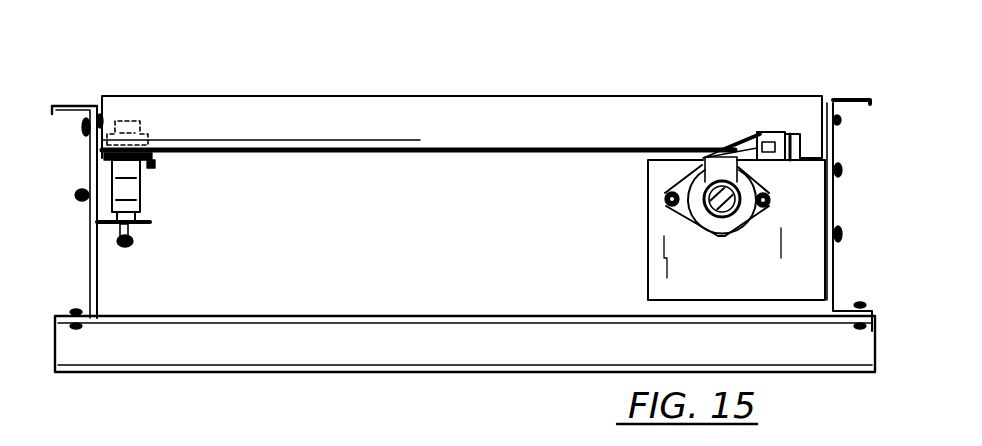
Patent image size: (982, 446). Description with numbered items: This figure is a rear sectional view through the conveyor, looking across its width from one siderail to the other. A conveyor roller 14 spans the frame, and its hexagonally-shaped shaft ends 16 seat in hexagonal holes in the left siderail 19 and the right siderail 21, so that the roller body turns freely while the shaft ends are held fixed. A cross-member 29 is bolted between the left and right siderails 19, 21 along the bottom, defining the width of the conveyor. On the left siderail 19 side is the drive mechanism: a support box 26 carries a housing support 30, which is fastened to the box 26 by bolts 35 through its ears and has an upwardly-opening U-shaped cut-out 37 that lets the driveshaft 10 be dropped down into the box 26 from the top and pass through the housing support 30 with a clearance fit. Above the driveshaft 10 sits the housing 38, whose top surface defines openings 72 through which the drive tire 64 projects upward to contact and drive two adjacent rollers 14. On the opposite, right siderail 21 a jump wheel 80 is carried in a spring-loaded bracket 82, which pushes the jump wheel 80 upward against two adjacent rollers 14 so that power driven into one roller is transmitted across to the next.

The driveshaft 10 is at (723, 215).
The conveyor roller 14 is at (283, 96).
The shaft end 16 is at (840, 123).
The left siderail 19 is at (862, 98).
The right siderail 21 is at (66, 104).
The support box 26 is at (648, 228).
The cross-member 29 is at (352, 373).
The housing support 30 is at (688, 182).
The bolts 35 is at (665, 200).
The U-shaped cut-out 37 is at (712, 147).
The housing 38 is at (741, 138).
The drive tire 64 is at (783, 136).
The openings 72 is at (768, 134).
The jump wheel 80 is at (138, 122).
The spring-loaded bracket 82 is at (143, 204).